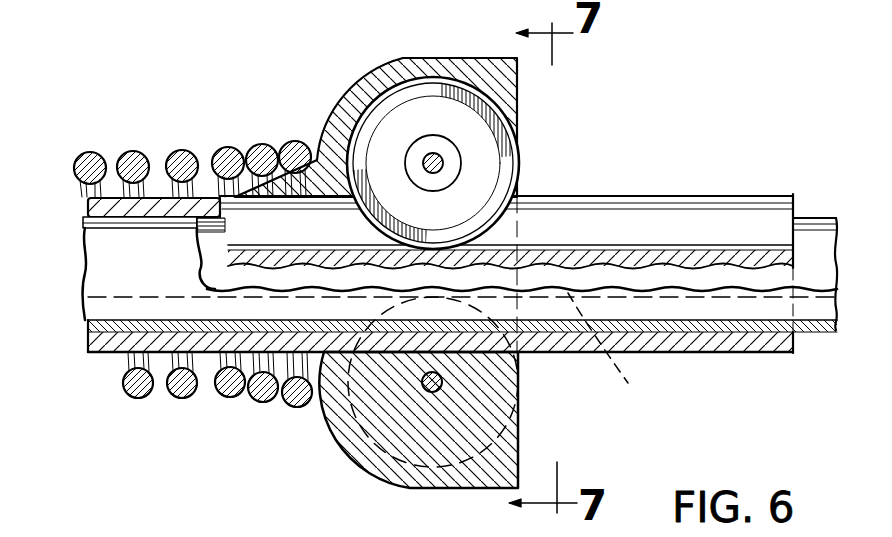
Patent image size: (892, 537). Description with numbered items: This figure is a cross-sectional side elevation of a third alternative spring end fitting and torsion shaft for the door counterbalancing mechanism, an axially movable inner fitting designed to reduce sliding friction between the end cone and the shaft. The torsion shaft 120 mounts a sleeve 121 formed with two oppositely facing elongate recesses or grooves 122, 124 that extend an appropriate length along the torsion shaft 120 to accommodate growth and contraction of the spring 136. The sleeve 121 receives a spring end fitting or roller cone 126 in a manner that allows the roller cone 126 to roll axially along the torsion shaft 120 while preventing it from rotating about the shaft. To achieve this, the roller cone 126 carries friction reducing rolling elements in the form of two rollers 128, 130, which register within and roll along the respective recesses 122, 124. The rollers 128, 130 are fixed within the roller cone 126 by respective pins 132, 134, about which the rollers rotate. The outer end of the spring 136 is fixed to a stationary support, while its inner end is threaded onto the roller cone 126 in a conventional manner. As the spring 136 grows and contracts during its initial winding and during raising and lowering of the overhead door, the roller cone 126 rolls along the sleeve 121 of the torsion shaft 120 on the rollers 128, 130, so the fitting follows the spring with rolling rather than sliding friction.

The torsion shaft 120 is at (123, 223).
The sleeve 121 is at (786, 360).
The recess 122 is at (560, 250).
The recess 124 is at (620, 348).
The roller cone 126 is at (318, 436).
The roller 128 is at (500, 113).
The roller 130 is at (493, 444).
The pin 132 is at (424, 153).
The pin 134 is at (443, 384).
The spring 136 is at (144, 156).